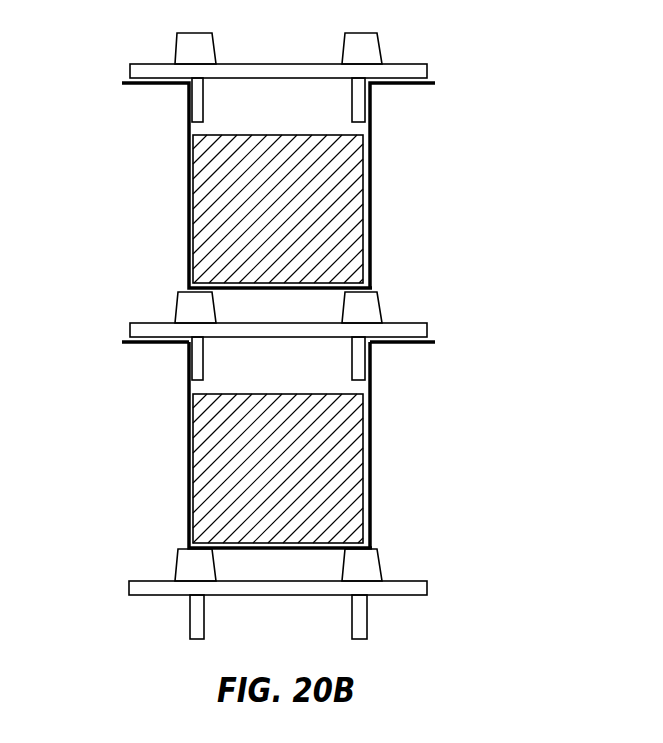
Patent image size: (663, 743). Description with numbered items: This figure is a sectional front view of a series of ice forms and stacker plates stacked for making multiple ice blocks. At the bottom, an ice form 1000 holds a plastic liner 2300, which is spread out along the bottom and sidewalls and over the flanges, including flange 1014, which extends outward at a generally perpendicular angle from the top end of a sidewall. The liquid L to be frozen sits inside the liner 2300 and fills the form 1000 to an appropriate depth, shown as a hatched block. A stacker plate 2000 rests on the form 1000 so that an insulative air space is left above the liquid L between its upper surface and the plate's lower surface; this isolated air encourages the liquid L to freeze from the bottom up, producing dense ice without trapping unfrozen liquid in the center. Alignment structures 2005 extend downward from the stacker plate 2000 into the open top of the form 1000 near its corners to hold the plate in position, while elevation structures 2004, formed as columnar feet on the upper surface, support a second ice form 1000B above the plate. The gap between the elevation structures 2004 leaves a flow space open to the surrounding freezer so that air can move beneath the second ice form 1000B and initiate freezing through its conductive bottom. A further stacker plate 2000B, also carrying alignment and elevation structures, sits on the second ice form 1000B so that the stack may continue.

The stacker plate 2000B is at (412, 71).
The second ice form 1000B is at (371, 168).
The elevation structures 2004 is at (370, 303).
The stacker plate 2000 is at (415, 332).
The flange 1014 is at (435, 343).
The alignment structures 2005 is at (198, 367).
The ice form 1000 is at (371, 392).
The plastic liner 2300 is at (369, 495).
The liquid L is at (243, 468).